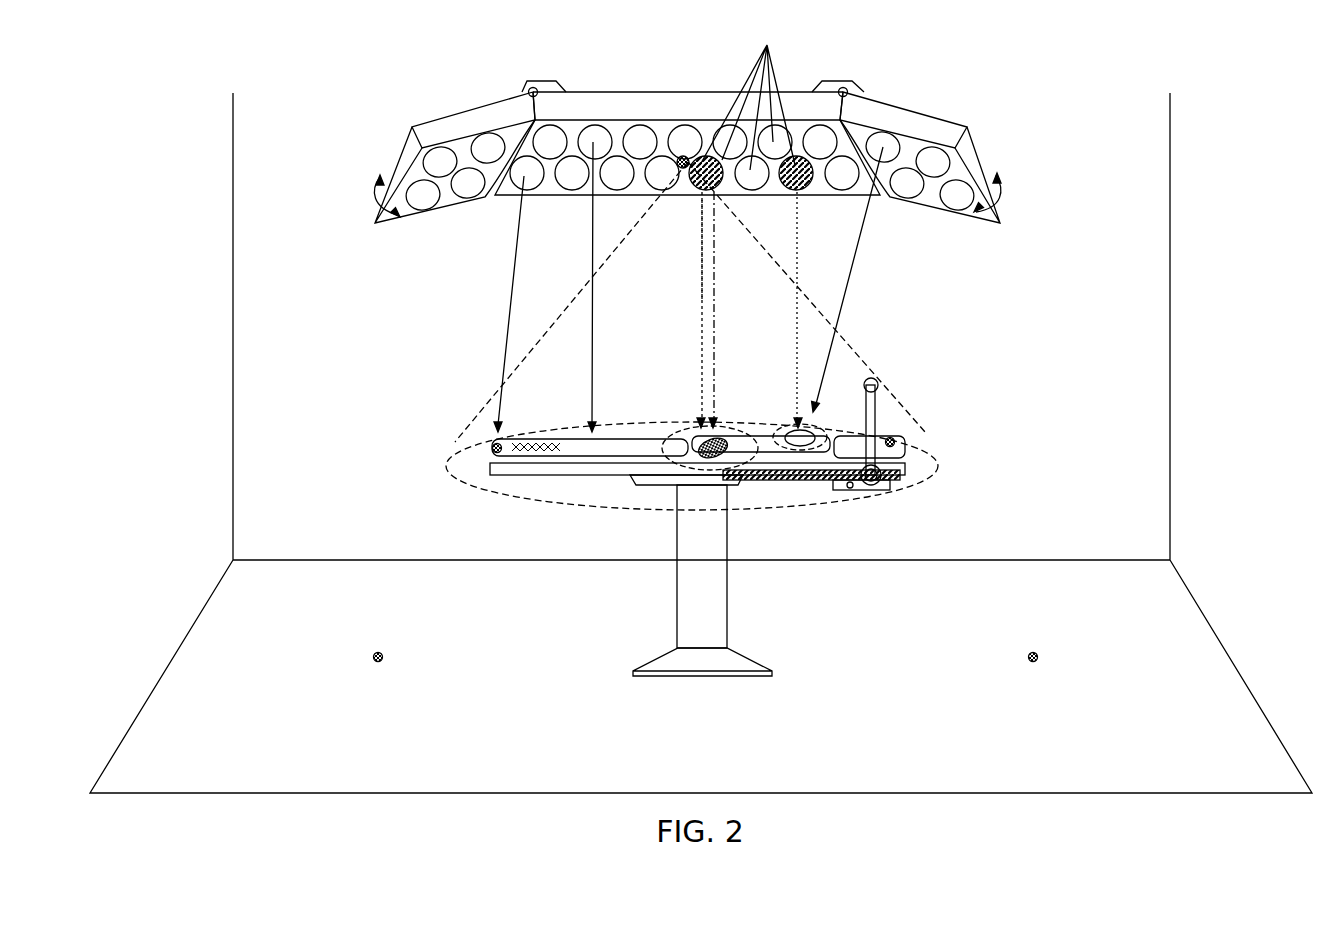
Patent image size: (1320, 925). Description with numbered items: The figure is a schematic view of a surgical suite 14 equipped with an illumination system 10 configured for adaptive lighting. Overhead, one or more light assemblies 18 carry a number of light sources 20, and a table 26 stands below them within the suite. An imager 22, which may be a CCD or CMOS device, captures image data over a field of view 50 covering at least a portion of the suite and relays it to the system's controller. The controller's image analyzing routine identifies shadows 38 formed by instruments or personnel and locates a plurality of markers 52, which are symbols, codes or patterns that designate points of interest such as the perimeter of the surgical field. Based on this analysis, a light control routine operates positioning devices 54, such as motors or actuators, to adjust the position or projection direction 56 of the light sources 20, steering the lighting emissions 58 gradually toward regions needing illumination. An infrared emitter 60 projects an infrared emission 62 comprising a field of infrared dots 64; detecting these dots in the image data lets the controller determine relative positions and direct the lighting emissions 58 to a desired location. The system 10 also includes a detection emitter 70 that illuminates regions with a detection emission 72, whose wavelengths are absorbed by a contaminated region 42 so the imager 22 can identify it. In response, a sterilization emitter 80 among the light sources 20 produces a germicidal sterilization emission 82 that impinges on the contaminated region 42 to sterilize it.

The illumination system 10 is at (691, 141).
The surgical suite 14 is at (277, 425).
The light assembly 18 is at (433, 122).
The light source 20 is at (767, 45).
The imager 22 is at (683, 156).
The table 26 is at (557, 470).
The shadow 38 is at (555, 428).
The contaminated region 42 is at (690, 428).
The field of view 50 is at (651, 283).
The marker 52 is at (495, 442).
The positioning device 54 is at (533, 88).
The projection direction 56 is at (380, 193).
The lighting emission 58 is at (510, 302).
The infrared emitter 60 is at (800, 190).
The infrared emission 62 is at (797, 318).
The infrared dot 64 is at (788, 425).
The detection emitter 70 is at (698, 200).
The detection emission 72 is at (702, 360).
The sterilization emitter 80 is at (701, 310).
The sterilization emission 82 is at (714, 361).